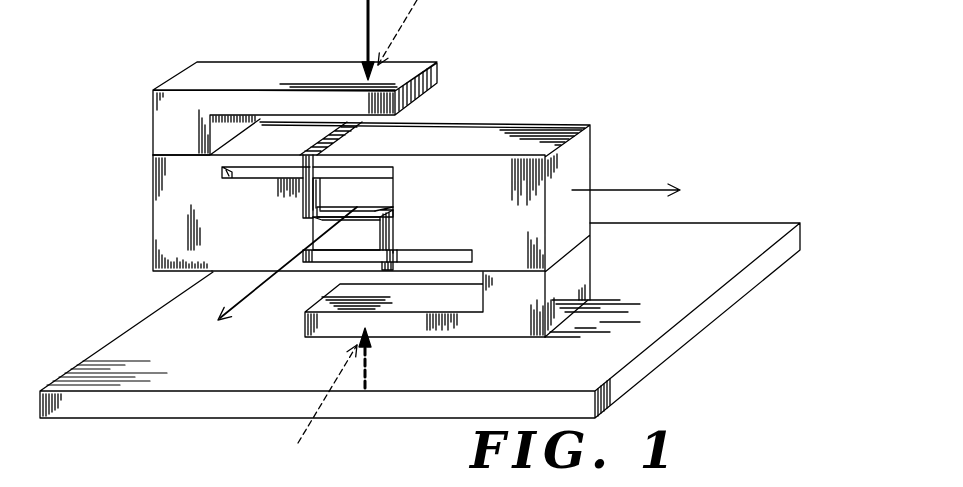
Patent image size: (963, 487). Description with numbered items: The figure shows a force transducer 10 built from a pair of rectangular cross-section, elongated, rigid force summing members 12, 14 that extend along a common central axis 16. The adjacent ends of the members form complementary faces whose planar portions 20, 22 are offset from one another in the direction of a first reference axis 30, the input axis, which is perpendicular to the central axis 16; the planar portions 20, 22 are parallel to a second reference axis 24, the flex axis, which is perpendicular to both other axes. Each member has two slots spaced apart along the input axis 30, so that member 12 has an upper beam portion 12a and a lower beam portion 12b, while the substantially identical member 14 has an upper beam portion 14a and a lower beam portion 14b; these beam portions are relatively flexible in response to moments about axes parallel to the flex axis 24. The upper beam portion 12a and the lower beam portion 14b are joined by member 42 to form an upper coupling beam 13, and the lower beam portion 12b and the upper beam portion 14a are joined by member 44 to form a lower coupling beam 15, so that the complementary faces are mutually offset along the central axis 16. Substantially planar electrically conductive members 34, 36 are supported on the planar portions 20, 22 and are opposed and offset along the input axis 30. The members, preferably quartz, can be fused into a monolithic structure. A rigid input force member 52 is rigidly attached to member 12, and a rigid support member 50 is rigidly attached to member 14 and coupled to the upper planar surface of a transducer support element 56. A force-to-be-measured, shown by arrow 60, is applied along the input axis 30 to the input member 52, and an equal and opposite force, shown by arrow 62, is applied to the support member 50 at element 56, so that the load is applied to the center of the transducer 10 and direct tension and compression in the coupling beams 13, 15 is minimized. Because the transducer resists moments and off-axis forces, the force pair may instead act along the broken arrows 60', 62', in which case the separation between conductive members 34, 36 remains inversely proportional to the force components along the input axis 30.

The transducer 10 is at (112, 291).
The force summing member 12 is at (165, 226).
The upper beam portion 12a is at (263, 162).
The lower beam portion 12b is at (327, 265).
The upper coupling beam 13 is at (279, 176).
The force summing member 14 is at (508, 177).
The upper beam portion 14a is at (424, 264).
The lower beam portion 14b is at (353, 165).
The lower coupling beam 15 is at (407, 273).
The central axis 16 is at (628, 191).
The planar portion 20 is at (360, 218).
The planar portion 22 is at (373, 210).
The second reference axis 24 is at (240, 306).
The first reference axis 30 is at (366, 6).
The electrically conductive member 34 is at (322, 219).
The electrically conductive member 36 is at (327, 207).
The joining member 42 is at (327, 135).
The joining member 44 is at (394, 250).
The rigid support member 50 is at (517, 326).
The rigid input force member 52 is at (165, 121).
The transducer support element 56 is at (686, 337).
The arrow 60 is at (341, 58).
The broken arrow 60' is at (411, 32).
The arrow 62 is at (387, 358).
The broken arrow 62' is at (322, 394).